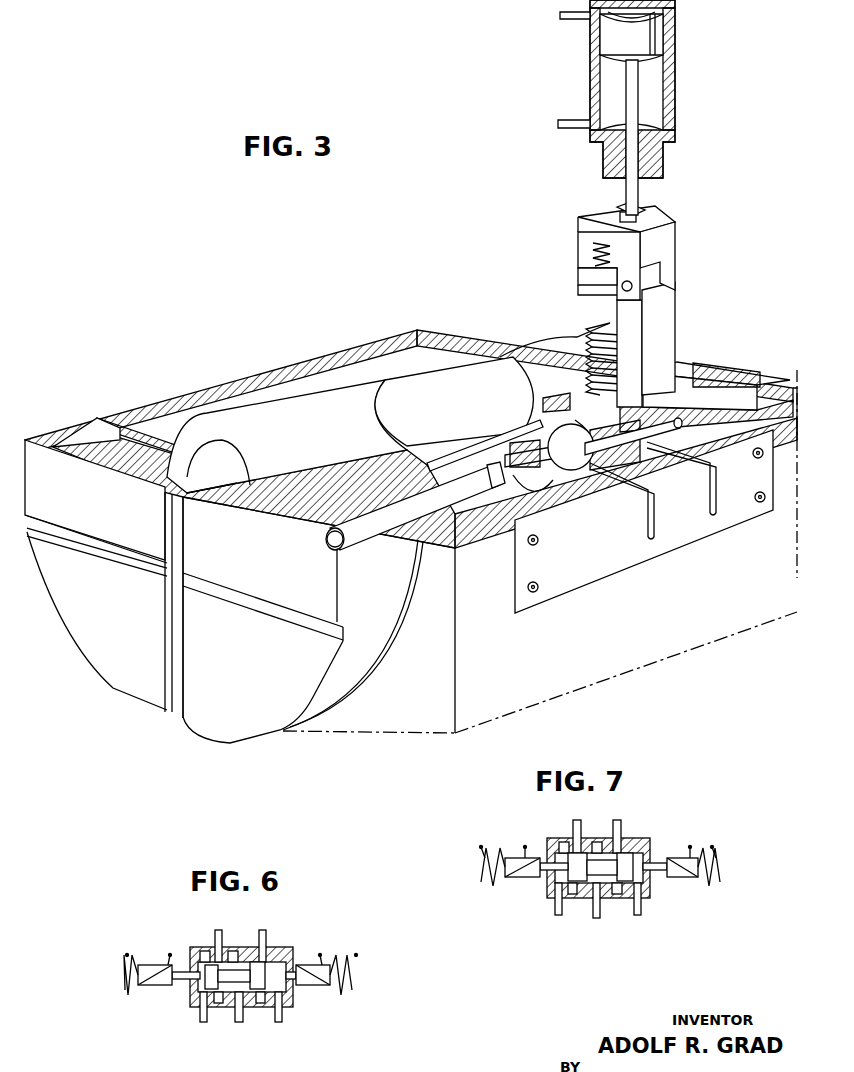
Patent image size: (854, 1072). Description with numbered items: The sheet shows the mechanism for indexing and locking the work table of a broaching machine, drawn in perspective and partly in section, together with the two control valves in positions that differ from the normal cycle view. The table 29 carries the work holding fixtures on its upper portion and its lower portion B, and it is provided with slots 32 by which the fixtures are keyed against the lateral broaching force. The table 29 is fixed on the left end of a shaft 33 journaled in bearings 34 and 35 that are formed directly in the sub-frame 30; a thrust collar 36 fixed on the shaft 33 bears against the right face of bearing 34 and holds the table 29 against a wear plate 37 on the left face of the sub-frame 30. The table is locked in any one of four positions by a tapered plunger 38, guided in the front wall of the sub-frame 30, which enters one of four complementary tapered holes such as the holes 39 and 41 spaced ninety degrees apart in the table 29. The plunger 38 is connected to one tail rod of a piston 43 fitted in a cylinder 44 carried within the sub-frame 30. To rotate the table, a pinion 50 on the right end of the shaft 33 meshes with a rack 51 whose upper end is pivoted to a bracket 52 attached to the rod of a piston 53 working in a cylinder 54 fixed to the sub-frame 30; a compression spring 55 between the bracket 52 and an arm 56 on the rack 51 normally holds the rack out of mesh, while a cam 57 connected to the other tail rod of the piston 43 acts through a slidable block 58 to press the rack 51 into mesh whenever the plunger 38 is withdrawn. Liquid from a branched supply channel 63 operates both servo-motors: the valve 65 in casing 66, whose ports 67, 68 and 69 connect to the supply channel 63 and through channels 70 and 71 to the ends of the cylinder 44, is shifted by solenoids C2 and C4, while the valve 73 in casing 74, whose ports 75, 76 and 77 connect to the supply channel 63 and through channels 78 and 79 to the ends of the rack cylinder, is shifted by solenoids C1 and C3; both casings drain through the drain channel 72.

In FIG. 3, the table 29 is at (228, 718).
In FIG. 3, the sub-frame 30 is at (625, 653).
In FIG. 3, the slots 32 is at (255, 607).
In FIG. 3, the shaft 33 is at (350, 425).
In FIG. 3, the bearing 34 is at (340, 464).
In FIG. 3, the bearing 35 is at (560, 400).
In FIG. 3, the thrust collar 36 is at (405, 448).
In FIG. 3, the wear plate 37 is at (352, 712).
In FIG. 3, the plunger 38 is at (415, 506).
In FIG. 3, the tapered hole 39 is at (318, 535).
In FIG. 3, the tapered hole 41 is at (75, 445).
In FIG. 3, the piston 43 is at (597, 454).
In FIG. 3, the cylinder 44 is at (512, 455).
In FIG. 3, the pinion 50 is at (600, 343).
In FIG. 3, the rack 51 is at (665, 318).
In FIG. 3, the bracket 52 is at (664, 234).
In FIG. 3, the piston 53 is at (631, 113).
In FIG. 3, the cylinder 54 is at (655, 76).
In FIG. 3, the compression spring 55 is at (592, 248).
In FIG. 3, the arm 56 is at (592, 276).
In FIG. 3, the cam 57 is at (750, 385).
In FIG. 3, the slidable block 58 is at (716, 386).
In FIG. 7, the supply channel 63 is at (596, 918).
In FIG. 6, the supply channel 63 is at (238, 1022).
In FIG. 6, the valve 65 is at (262, 965).
In FIG. 6, the valve casing 66 is at (203, 951).
In FIG. 6, the port 67 is at (236, 951).
In FIG. 6, the port 68 is at (218, 1003).
In FIG. 6, the port 69 is at (260, 1003).
In FIG. 3, the channel 70 is at (650, 520).
In FIG. 6, the channel 70 is at (215, 945).
In FIG. 3, the channel 71 is at (712, 498).
In FIG. 6, the channel 71 is at (263, 932).
In FIG. 7, the drain channel 72 is at (553, 907).
In FIG. 6, the drain channel 72 is at (200, 1015).
In FIG. 7, the valve 73 is at (628, 855).
In FIG. 7, the valve casing 74 is at (562, 842).
In FIG. 7, the port 75 is at (597, 842).
In FIG. 7, the port 76 is at (572, 895).
In FIG. 7, the port 77 is at (616, 895).
In FIG. 7, the channel 78 is at (574, 825).
In FIG. 7, the channel 79 is at (627, 825).
In FIG. 3, the lower portion B is at (118, 655).
In FIG. 7, the solenoid C1 is at (705, 858).
In FIG. 6, the solenoid C2 is at (140, 960).
In FIG. 7, the solenoid C3 is at (490, 860).
In FIG. 6, the solenoid C4 is at (340, 965).